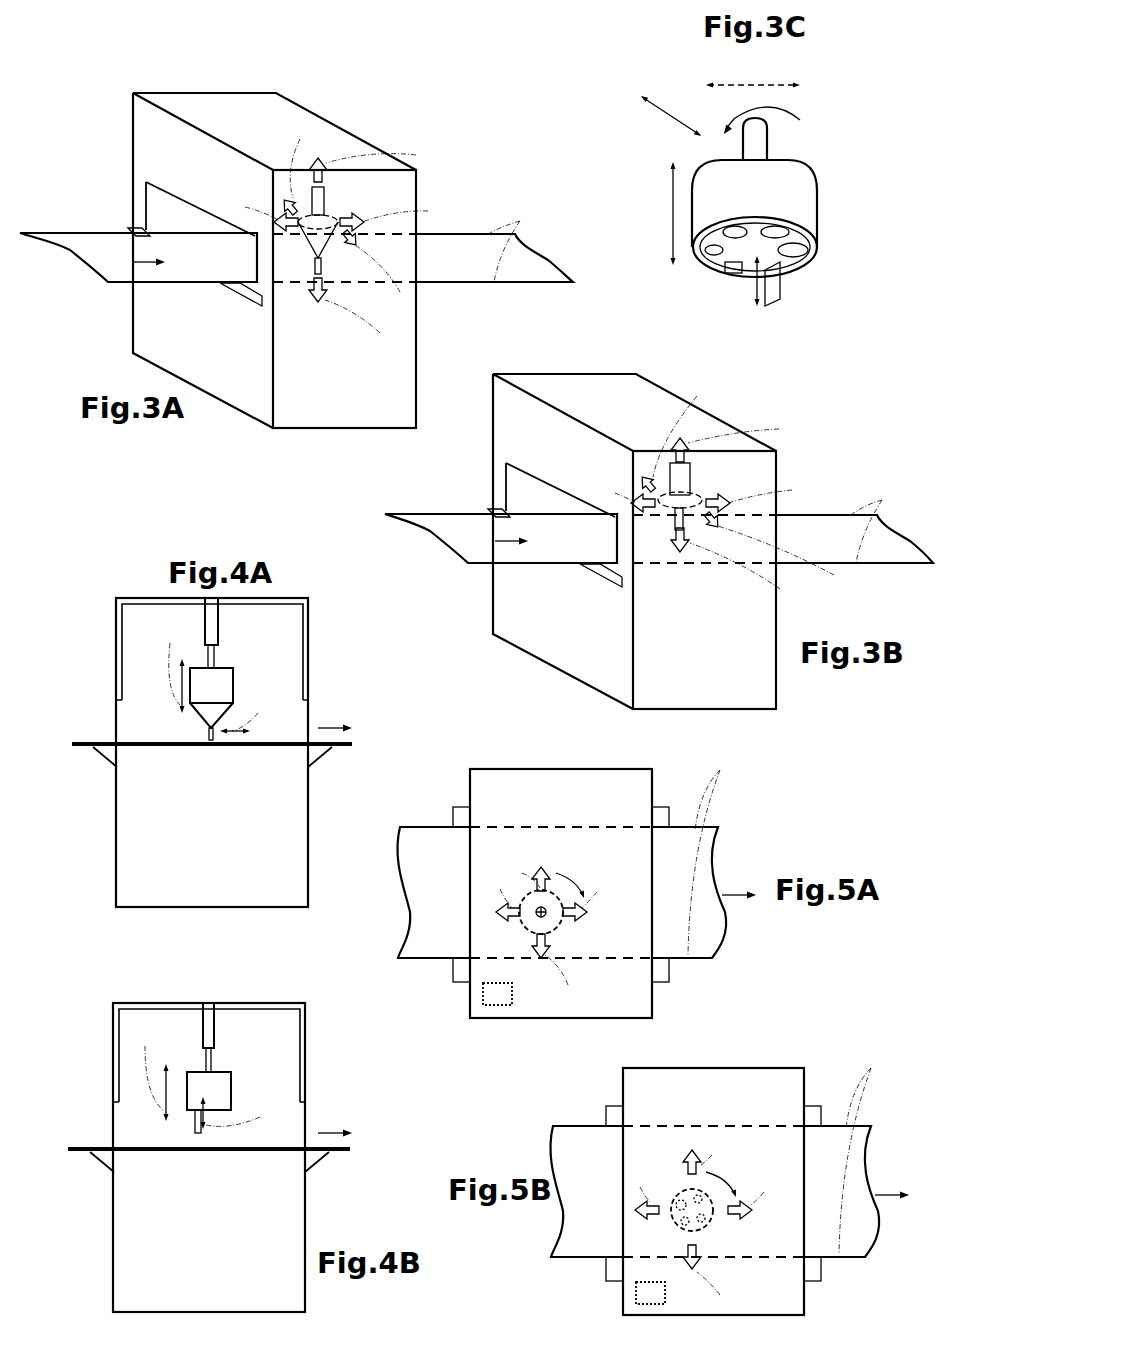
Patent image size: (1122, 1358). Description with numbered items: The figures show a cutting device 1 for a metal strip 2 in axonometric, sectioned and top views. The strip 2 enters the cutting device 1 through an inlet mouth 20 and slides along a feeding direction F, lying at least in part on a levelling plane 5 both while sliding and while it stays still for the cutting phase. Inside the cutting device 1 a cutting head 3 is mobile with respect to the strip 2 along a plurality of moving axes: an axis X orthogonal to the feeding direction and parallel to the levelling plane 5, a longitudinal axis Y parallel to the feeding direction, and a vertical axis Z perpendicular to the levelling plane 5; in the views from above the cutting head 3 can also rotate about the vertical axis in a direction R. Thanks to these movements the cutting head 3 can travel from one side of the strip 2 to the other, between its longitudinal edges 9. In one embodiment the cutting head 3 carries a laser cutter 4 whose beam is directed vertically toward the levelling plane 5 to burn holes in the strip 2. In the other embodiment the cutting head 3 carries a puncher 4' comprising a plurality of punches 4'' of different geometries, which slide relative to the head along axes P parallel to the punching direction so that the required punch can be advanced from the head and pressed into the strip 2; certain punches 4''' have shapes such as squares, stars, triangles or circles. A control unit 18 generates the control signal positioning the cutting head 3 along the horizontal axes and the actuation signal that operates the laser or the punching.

In FIG. 3A, the cutting device 1 is at (336, 98).
In FIG. 3B, the cutting device 1 is at (634, 529).
In FIG. 4A, the cutting device 1 is at (100, 620).
In FIG. 4B, the cutting device 1 is at (97, 1025).
In FIG. 5A, the cutting device 1 is at (521, 745).
In FIG. 5B, the cutting device 1 is at (736, 1050).
In FIG. 3A, the metal strip 2 is at (98, 250).
In FIG. 3B, the metal strip 2 is at (659, 515).
In FIG. 4A, the metal strip 2 is at (108, 742).
In FIG. 4B, the metal strip 2 is at (105, 1147).
In FIG. 5A, the metal strip 2 is at (437, 880).
In FIG. 5B, the metal strip 2 is at (590, 1178).
In FIG. 3A, the cutting head 3 is at (260, 295).
In FIG. 3B, the cutting head 3 is at (709, 507).
In FIG. 3C, the cutting head 3 is at (787, 183).
In FIG. 4A, the cutting head 3 is at (214, 684).
In FIG. 4B, the cutting head 3 is at (218, 1090).
In FIG. 5A, the cutting head 3 is at (560, 920).
In FIG. 5B, the cutting head 3 is at (702, 1222).
In FIG. 3A, the laser cutter 4 is at (299, 297).
In FIG. 4A, the laser cutter 4 is at (149, 687).
In FIG. 5A, the laser cutter 4 is at (516, 929).
In FIG. 3B, the puncher 4' is at (710, 579).
In FIG. 3C, the puncher 4' is at (680, 282).
In FIG. 4B, the puncher 4' is at (177, 1085).
In FIG. 5B, the puncher 4' is at (714, 1226).
In FIG. 3C, the punches 4'' is at (788, 225).
In FIG. 3C, the punches 4''' is at (736, 292).
In FIG. 3A, the levelling plane 5 is at (135, 228).
In FIG. 3B, the levelling plane 5 is at (542, 515).
In FIG. 4A, the levelling plane 5 is at (116, 751).
In FIG. 4B, the levelling plane 5 is at (115, 1155).
In FIG. 5A, the levelling plane 5 is at (462, 816).
In FIG. 5B, the levelling plane 5 is at (615, 1113).
In FIG. 3A, the longitudinal edges 9 is at (508, 240).
In FIG. 3B, the longitudinal edges 9 is at (870, 520).
In FIG. 5A, the longitudinal edges 9 is at (708, 851).
In FIG. 5B, the longitudinal edges 9 is at (859, 1149).
In FIG. 5A, the control unit 18 is at (498, 1006).
In FIG. 5B, the control unit 18 is at (650, 1305).
In FIG. 3A, the inlet mouth 20 is at (163, 192).
In FIG. 3B, the inlet mouth 20 is at (540, 454).